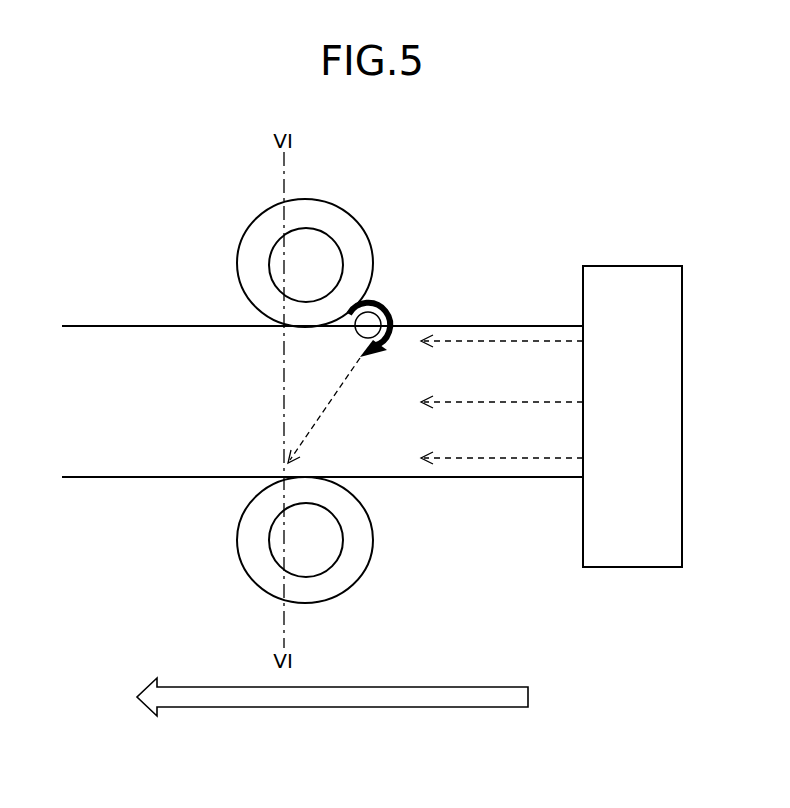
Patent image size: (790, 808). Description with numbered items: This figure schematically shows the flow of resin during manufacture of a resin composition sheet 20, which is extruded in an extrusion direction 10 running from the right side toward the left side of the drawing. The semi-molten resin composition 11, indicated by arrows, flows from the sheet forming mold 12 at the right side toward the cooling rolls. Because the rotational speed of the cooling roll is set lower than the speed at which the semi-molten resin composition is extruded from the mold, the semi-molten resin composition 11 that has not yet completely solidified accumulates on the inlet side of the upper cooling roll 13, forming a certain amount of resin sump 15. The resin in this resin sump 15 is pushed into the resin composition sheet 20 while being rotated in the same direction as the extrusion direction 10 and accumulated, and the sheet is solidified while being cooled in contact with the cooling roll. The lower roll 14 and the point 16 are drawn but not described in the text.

The extrusion direction 10 is at (332, 711).
The semi-molten resin composition 11 is at (518, 460).
The sheet forming mold 12 is at (628, 278).
The upper cooling roll 13 is at (350, 238).
The lower roller 14 is at (328, 592).
The resin sump 15 is at (398, 313).
The nip 16 is at (283, 477).
The resin composition sheet 20 is at (155, 340).